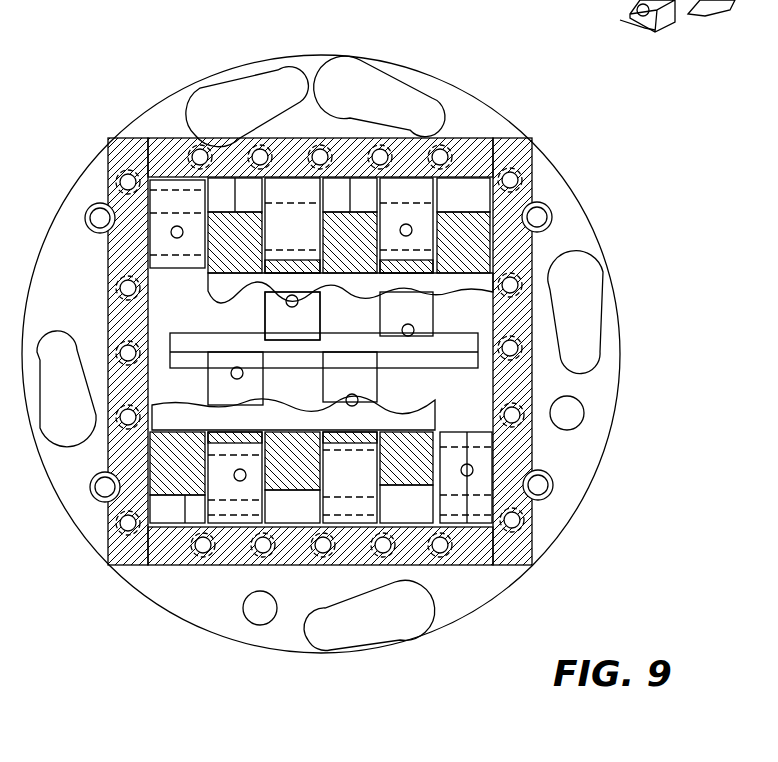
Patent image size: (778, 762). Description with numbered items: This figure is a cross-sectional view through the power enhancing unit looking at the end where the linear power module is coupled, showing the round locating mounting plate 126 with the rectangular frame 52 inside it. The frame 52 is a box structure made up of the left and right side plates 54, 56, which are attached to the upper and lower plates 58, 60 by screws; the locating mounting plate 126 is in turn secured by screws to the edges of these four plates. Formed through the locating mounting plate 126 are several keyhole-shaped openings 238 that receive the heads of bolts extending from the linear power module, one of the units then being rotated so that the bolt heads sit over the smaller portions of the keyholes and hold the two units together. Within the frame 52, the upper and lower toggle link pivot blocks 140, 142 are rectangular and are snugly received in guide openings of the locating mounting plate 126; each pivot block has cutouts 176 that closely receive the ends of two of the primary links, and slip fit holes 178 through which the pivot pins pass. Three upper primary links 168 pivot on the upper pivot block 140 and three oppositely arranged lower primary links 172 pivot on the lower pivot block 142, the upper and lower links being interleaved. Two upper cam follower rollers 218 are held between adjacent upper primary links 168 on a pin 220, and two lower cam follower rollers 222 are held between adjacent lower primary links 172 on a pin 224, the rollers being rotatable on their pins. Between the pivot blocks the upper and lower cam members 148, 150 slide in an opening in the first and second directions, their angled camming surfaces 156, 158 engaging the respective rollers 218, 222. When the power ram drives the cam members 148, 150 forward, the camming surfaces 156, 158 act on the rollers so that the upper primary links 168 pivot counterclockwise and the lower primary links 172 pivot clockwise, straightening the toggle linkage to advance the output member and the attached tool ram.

The frame 52 is at (333, 348).
The left side plate 54 is at (110, 540).
The right side plate 56 is at (537, 243).
The upper plate 58 is at (462, 136).
The lower plate 60 is at (182, 567).
The locating mounting plate 126 is at (620, 305).
The upper toggle link pivot block 140 is at (170, 176).
The lower toggle link pivot block 142 is at (482, 532).
The upper cam member 148 is at (265, 320).
The lower cam member 150 is at (383, 390).
The angled camming surface 156 is at (318, 332).
The angled camming surface 158 is at (258, 405).
The upper primary links 168 is at (455, 214).
The lower primary links 172 is at (403, 482).
The cutouts 176 is at (700, 15).
The slip fit holes 178 is at (635, 28).
The upper cam follower rollers 218 is at (305, 262).
The pin 220 is at (212, 282).
The lower cam follower rollers 222 is at (225, 443).
The pin 224 is at (435, 418).
The keyhole-shaped openings 238 is at (220, 88).